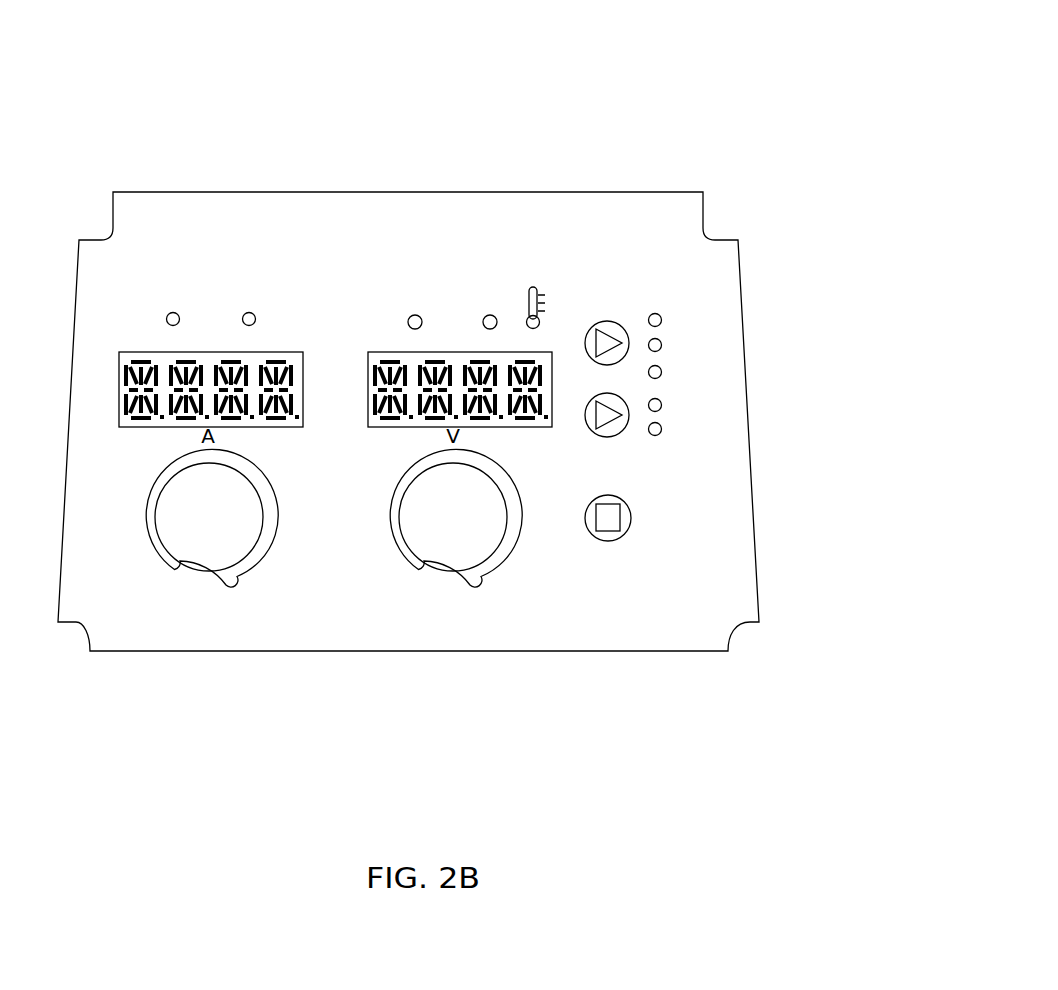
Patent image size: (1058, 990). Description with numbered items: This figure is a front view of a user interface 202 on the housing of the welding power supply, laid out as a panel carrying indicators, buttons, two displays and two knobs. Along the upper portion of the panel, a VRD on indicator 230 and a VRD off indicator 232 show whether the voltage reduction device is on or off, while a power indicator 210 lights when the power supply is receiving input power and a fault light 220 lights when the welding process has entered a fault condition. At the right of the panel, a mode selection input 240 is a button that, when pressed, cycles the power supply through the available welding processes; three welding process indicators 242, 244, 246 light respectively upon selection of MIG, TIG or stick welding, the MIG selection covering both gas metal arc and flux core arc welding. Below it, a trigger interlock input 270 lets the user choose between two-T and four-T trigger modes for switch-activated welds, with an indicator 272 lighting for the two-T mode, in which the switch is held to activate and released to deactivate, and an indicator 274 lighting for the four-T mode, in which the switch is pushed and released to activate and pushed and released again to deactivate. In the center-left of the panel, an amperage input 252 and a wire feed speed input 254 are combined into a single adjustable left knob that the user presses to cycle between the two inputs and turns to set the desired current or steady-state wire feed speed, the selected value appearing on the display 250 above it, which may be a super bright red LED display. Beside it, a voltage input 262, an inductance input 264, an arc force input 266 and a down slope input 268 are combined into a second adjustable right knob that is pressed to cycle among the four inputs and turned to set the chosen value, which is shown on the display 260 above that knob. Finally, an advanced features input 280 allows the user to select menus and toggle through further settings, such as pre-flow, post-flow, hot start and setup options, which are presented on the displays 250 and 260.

The user interface 202 is at (663, 55).
The power indicator 210 is at (411, 328).
The fault light 220 is at (488, 327).
The VRD on indicator 230 is at (176, 307).
The VRD off indicator 232 is at (253, 307).
The mode selection input 240 is at (598, 322).
The welding process indicator 242 is at (651, 312).
The welding process indicator 244 is at (657, 340).
The welding process indicator 246 is at (663, 364).
The display 250 is at (270, 433).
The amperage input 252 is at (160, 589).
The wire feed speed input 254 is at (207, 558).
The display 260 is at (392, 432).
The voltage input 262 is at (563, 590).
The inductance input 264 is at (563, 590).
The arc force input 266 is at (563, 590).
The down slope input 268 is at (468, 563).
The trigger interlock input 270 is at (588, 392).
The 2T mode indicator 272 is at (662, 398).
The 4T mode indicator 274 is at (662, 437).
The advanced features input 280 is at (625, 533).